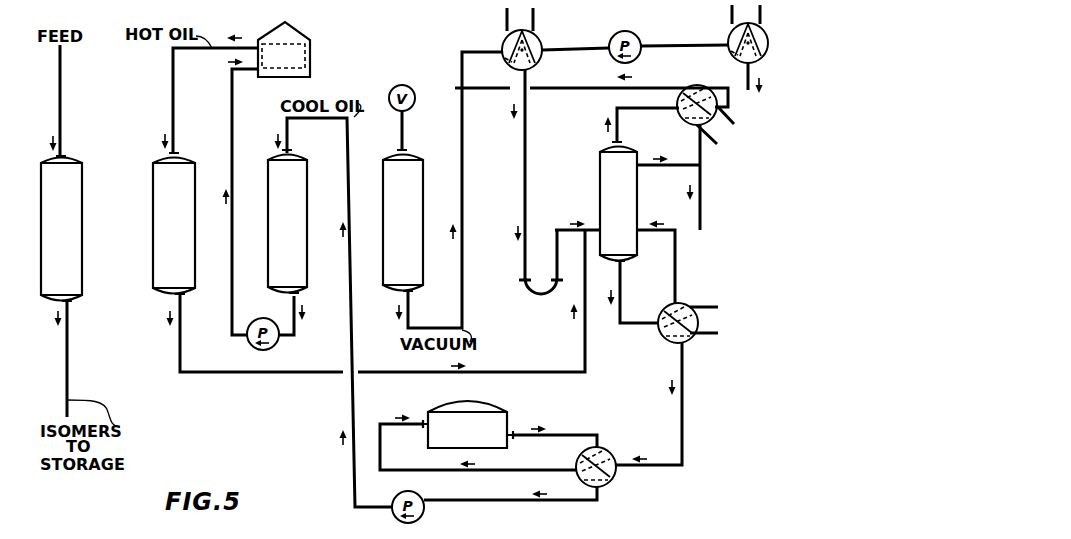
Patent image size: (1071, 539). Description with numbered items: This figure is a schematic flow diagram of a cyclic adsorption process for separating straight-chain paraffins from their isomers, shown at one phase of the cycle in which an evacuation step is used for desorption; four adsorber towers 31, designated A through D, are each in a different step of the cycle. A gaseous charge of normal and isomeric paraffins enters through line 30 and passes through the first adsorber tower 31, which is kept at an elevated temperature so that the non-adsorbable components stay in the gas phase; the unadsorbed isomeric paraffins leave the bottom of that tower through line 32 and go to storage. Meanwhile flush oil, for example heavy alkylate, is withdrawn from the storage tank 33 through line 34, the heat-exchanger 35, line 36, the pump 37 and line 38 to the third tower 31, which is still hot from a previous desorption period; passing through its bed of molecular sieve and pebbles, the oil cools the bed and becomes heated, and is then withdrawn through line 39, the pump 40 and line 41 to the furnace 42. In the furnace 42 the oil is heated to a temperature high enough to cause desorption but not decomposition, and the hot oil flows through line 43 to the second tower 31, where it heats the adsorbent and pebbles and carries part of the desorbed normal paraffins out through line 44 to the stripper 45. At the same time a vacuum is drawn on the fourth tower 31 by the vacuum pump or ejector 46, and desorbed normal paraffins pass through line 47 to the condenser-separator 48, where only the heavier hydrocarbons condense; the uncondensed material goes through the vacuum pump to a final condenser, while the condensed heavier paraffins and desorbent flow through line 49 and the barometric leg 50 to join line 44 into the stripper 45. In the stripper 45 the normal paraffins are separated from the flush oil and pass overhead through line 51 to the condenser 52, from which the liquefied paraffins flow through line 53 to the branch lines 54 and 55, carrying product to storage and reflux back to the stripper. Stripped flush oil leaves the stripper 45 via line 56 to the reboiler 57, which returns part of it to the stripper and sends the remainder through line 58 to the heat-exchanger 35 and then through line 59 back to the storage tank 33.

The line 30 is at (61, 88).
The adsorber tower 31 is at (232, 225).
The line 32 is at (68, 372).
The storage tank 33 is at (468, 424).
The line 34 is at (569, 435).
The heat-exchanger 35 is at (602, 450).
The line 36 is at (466, 504).
The pump 37 is at (424, 499).
The line 38 is at (354, 400).
The line 39 is at (285, 338).
The pump 40 is at (252, 345).
The line 41 is at (233, 113).
The furnace 42 is at (310, 62).
The line 43 is at (173, 88).
The line 44 is at (512, 372).
The stripper 45 is at (618, 201).
The vacuum pump or ejector 46 is at (649, 56).
The line 47 is at (463, 180).
The condenser-separator 48 is at (539, 35).
The line 49 is at (527, 180).
The barometric leg 50 is at (536, 298).
The line 51 is at (620, 124).
The condenser 52 is at (684, 120).
The line 53 is at (702, 156).
The branch line 54 is at (702, 198).
The branch line 55 is at (650, 168).
The line 56 is at (640, 324).
The reboiler 57 is at (684, 342).
The line 58 is at (683, 427).
The line 59 is at (381, 446).